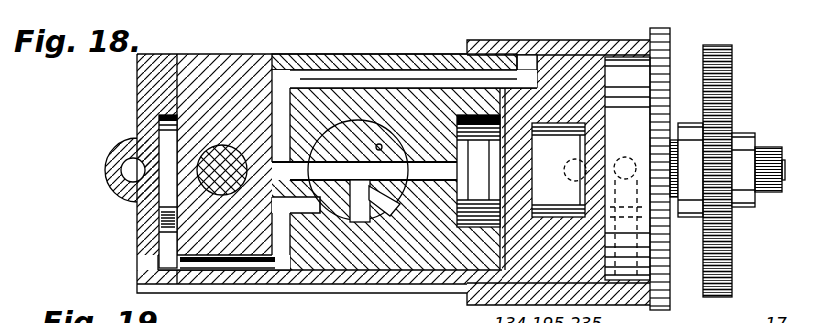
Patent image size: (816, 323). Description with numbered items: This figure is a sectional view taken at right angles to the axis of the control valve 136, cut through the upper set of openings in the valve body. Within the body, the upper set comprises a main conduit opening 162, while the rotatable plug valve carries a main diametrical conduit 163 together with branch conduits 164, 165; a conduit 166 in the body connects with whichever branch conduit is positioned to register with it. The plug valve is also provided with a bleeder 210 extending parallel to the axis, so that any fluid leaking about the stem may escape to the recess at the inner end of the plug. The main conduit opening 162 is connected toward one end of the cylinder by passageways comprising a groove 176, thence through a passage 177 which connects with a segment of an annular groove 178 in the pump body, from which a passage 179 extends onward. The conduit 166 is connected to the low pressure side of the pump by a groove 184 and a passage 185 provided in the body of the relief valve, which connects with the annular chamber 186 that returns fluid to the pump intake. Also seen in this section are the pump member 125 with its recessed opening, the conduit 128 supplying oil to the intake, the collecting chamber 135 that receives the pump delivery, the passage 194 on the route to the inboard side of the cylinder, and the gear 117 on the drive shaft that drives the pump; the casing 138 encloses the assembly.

The gear 117 is at (734, 91).
The member 125 is at (562, 126).
The conduit 128 is at (626, 207).
The collecting chamber 135 is at (460, 112).
The control valve 136 is at (338, 62).
The casing body 138 is at (343, 272).
The main conduit opening 162 is at (409, 172).
The main diametrical conduit 163 is at (315, 172).
The branch conduit 164 is at (396, 206).
The branch conduit 165 is at (362, 216).
The conduit 166 is at (313, 214).
The groove 176 is at (277, 95).
The passage 177 is at (380, 78).
The annular groove 178 is at (527, 57).
The passage 179 is at (559, 170).
The groove 184 is at (278, 262).
The passage 185 is at (218, 259).
The annular chamber 186 is at (172, 197).
The passage 194 is at (627, 168).
The bleeder 210 is at (358, 170).